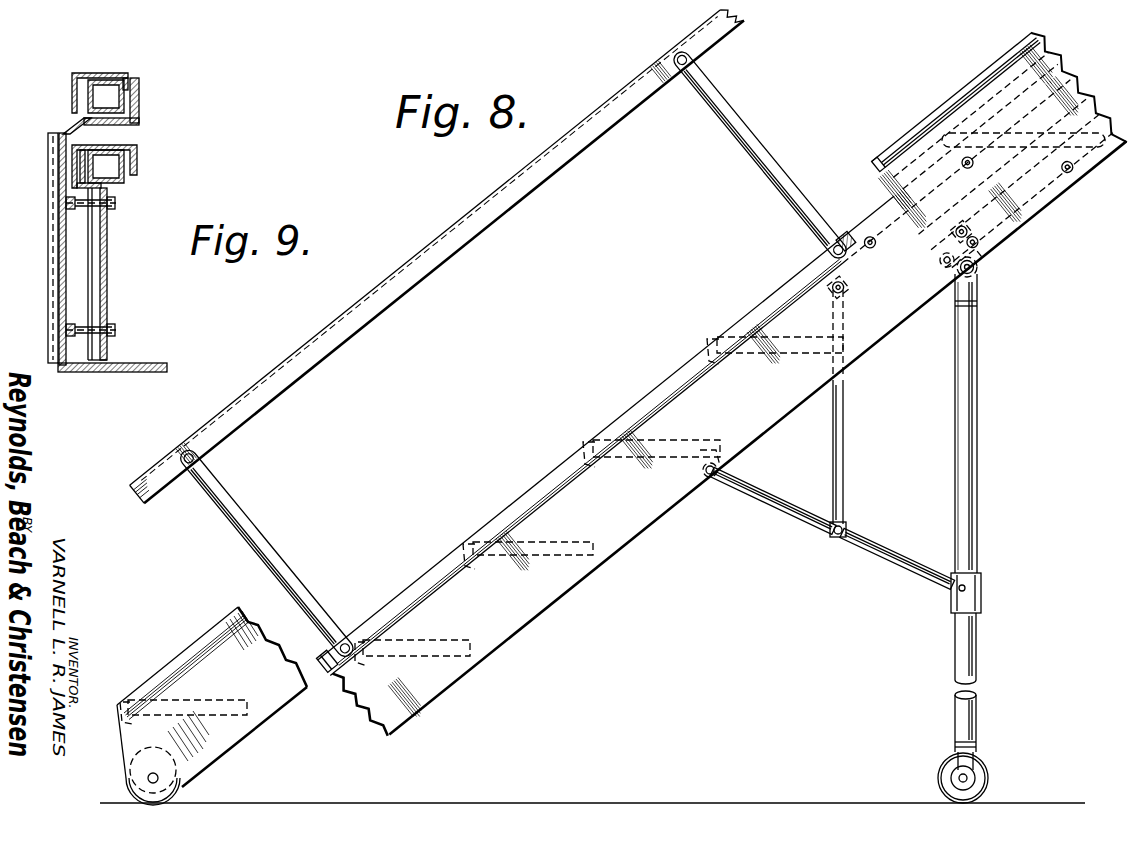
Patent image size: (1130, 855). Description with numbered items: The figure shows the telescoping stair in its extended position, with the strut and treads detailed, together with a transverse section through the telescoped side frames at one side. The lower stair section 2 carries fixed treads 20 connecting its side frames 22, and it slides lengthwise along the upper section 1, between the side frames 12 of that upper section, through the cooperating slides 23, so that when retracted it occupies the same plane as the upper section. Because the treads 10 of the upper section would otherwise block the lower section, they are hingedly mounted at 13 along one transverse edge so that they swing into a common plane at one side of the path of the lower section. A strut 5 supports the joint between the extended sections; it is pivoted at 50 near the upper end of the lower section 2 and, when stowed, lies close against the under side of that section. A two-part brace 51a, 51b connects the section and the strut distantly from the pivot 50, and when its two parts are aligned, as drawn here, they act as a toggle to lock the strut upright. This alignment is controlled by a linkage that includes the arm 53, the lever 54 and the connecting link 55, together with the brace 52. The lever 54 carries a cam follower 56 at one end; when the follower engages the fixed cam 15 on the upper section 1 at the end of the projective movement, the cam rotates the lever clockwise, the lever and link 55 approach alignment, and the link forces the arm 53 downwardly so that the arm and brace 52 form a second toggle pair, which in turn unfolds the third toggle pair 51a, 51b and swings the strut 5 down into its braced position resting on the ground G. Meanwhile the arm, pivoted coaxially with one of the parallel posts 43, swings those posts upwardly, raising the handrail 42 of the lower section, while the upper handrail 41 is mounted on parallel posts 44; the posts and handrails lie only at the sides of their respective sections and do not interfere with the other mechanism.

In FIG. 8, the upper section 1 is at (1070, 203).
In FIG. 9, the upper section 1 is at (46, 165).
In FIG. 8, the lower stair section 2 is at (238, 745).
In FIG. 9, the lower stair section 2 is at (110, 248).
In FIG. 8, the strut 5 is at (972, 505).
In FIG. 8, the treads of the upper section 10 is at (1093, 103).
In FIG. 8, the side frames of the upper section 12 is at (1053, 73).
In FIG. 9, the side frames of the upper section 12 is at (60, 283).
In FIG. 8, the hinge mounting 13 is at (940, 130).
In FIG. 8, the fixed cam 15 is at (962, 232).
In FIG. 8, the fixed treads 20 is at (520, 543).
In FIG. 8, the side frames of the lower section 22 is at (640, 530).
In FIG. 9, the side frames of the lower section 22 is at (107, 287).
In FIG. 8, the cooperating slides 23 is at (1022, 192).
In FIG. 9, the cooperating slides 23 is at (67, 203).
In FIG. 9, the handrail of the upper section 41 is at (78, 76).
In FIG. 8, the handrail of the lower section 42 is at (370, 322).
In FIG. 9, the handrail of the lower section 42 is at (103, 140).
In FIG. 8, the parallel posts 43 is at (275, 548).
In FIG. 9, the parallel posts 43 is at (128, 178).
In FIG. 9, the parallel posts 44 is at (127, 112).
In FIG. 8, the pivot 50 is at (979, 273).
In FIG. 8, the brace part 51a is at (783, 508).
In FIG. 8, the brace part 51b is at (906, 556).
In FIG. 8, the brace 52 is at (844, 437).
In FIG. 8, the arm 53 is at (833, 318).
In FIG. 8, the lever 54 is at (950, 272).
In FIG. 8, the connecting link 55 is at (846, 292).
In FIG. 8, the cam follower 56 is at (977, 257).
In FIG. 8, the ground G is at (490, 803).